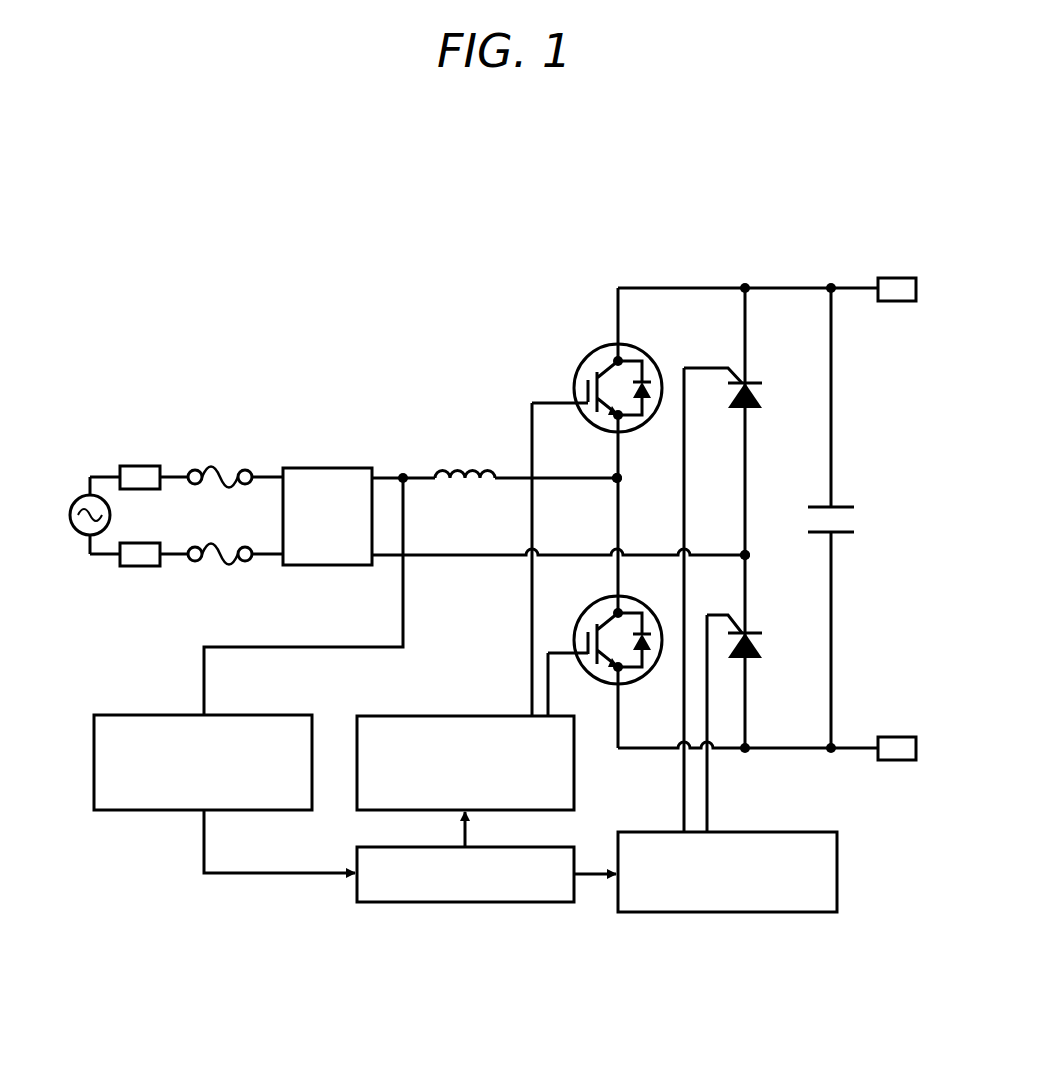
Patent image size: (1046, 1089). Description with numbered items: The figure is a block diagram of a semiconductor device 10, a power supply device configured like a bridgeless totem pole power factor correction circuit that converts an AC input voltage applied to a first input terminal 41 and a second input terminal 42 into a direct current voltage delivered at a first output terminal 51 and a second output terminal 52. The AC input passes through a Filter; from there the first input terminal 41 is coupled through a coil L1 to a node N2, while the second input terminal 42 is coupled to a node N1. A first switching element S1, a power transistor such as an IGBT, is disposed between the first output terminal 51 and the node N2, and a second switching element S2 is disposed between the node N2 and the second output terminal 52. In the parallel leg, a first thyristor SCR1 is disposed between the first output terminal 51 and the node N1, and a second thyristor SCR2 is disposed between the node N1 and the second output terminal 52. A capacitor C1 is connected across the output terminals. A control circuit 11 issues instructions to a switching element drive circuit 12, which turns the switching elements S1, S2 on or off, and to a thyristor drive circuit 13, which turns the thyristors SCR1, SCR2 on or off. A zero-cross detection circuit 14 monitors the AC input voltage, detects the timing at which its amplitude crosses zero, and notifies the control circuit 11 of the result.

The semiconductor device 10 is at (323, 314).
The control circuit 11 is at (485, 902).
The switching element drive circuit 12 is at (430, 716).
The thyristor drive circuit 13 is at (785, 832).
The zero-cross detection circuit 14 is at (262, 715).
The first input terminal 41 is at (155, 466).
The second input terminal 42 is at (135, 566).
The first output terminal 51 is at (893, 301).
The second output terminal 52 is at (893, 737).
The first switching element S1 is at (598, 350).
The second switching element S2 is at (612, 600).
The first thyristor SCR1 is at (758, 408).
The second thyristor SCR2 is at (758, 660).
The coil L1 is at (465, 449).
The capacitor C1 is at (851, 521).
The node N1 is at (750, 550).
The node N2 is at (622, 482).